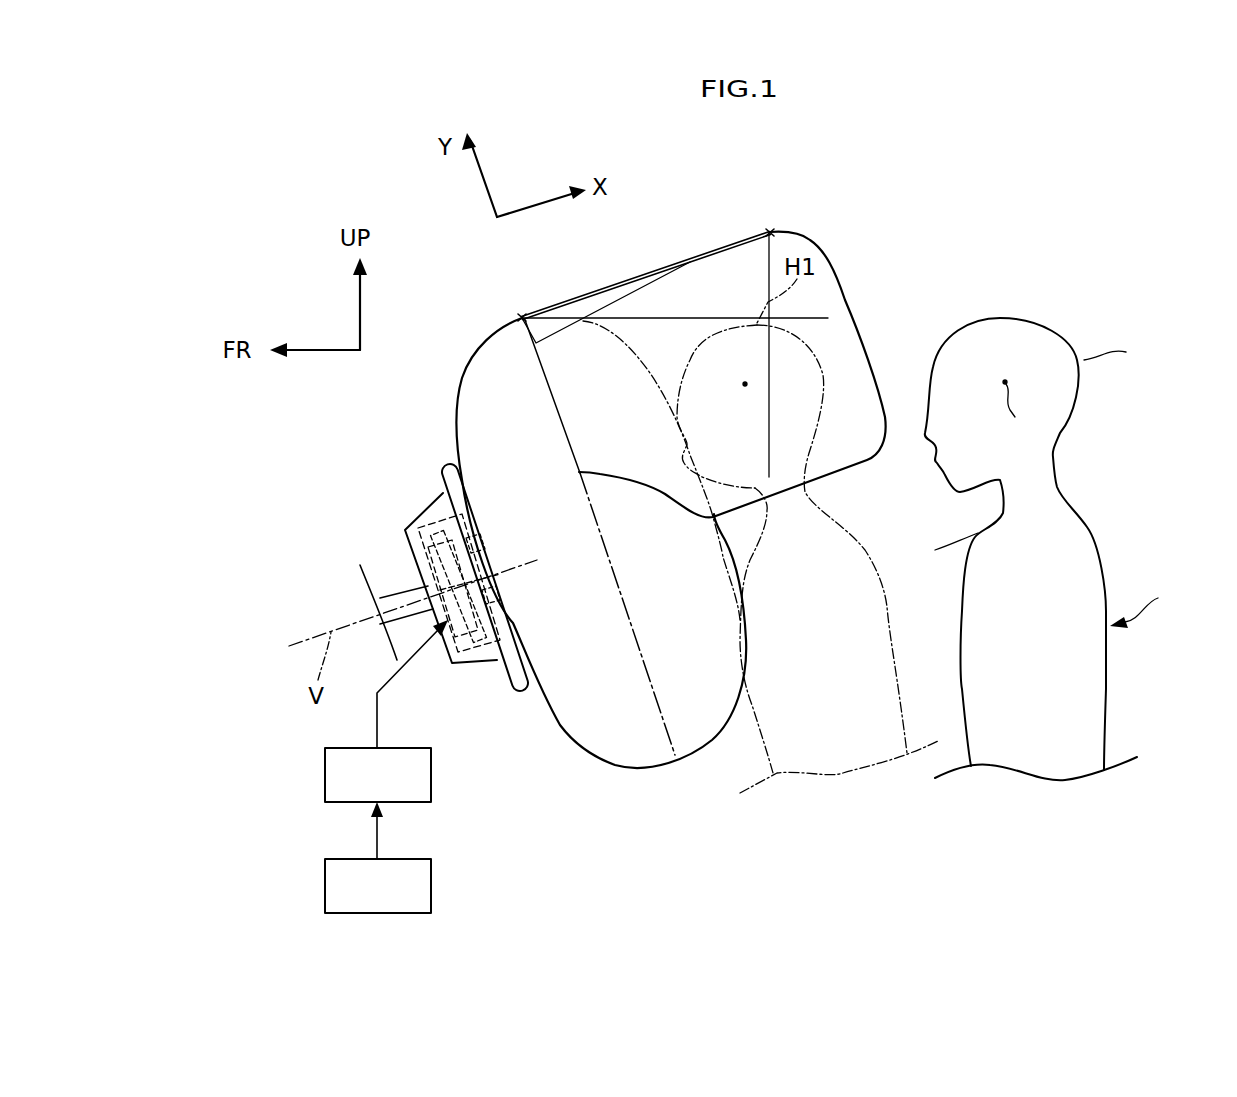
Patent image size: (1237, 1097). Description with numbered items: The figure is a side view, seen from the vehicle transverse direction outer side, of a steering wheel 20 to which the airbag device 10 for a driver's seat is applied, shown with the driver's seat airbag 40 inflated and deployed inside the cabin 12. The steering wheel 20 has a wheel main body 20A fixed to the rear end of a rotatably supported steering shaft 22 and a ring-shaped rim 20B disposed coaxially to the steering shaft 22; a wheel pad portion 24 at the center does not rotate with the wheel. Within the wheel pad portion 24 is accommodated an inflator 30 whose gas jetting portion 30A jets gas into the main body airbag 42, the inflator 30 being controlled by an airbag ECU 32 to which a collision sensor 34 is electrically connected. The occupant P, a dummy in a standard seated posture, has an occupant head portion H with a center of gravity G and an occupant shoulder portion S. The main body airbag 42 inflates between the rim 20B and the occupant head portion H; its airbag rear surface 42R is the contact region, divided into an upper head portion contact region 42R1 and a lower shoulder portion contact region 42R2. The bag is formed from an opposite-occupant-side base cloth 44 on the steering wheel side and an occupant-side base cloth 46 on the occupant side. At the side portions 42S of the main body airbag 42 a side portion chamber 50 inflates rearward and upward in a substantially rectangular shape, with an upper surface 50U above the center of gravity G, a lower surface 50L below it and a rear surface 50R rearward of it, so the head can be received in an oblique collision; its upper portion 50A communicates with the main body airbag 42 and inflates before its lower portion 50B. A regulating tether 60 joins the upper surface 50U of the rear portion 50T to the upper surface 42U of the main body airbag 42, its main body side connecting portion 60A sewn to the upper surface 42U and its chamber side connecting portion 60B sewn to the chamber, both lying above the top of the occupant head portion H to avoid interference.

The airbag device for a driver's seat 10 is at (322, 510).
The cabin 12 is at (990, 258).
The steering wheel 20 is at (394, 517).
The wheel main body 20A is at (421, 513).
The rim 20B is at (447, 464).
The steering shaft 22 is at (403, 590).
The wheel pad portion 24 is at (491, 543).
The inflator 30 is at (487, 662).
The gas jetting portion 30A is at (510, 580).
The airbag ECU 32 is at (325, 780).
The collision sensor 34 is at (325, 890).
The driver's seat airbag 40 is at (535, 282).
The main body airbag 42 is at (568, 755).
The upper surface of the main body airbag 42U is at (504, 328).
The side portions of the main body airbag 42S is at (628, 560).
The airbag rear surface 42R is at (746, 692).
The head portion contact region 42R1 is at (650, 371).
The shoulder portion contact region 42R2 is at (746, 598).
The opposite-occupant-side base cloth 44 is at (626, 755).
The occupant-side base cloth 46 is at (712, 715).
The side portion chamber 50 is at (856, 275).
The upper portion of the side portion chamber 50A is at (573, 343).
The upper surface of the side portion chamber 50U is at (685, 252).
The rear portion of the side portion chamber 50T is at (796, 245).
The rear surface of the side portion chamber 50R is at (862, 320).
The lower surface of the side portion chamber 50L is at (833, 480).
The lower portion of the side portion chamber 50B is at (603, 462).
The regulating tether 60 is at (648, 258).
The main body side connecting portion 60A is at (522, 326).
The chamber side connecting portion 60B is at (770, 228).
The center of gravity of the occupant head portion G is at (745, 386).
The occupant head portion H is at (825, 390).
The occupant shoulder portion S is at (722, 560).
The occupant P is at (902, 645).